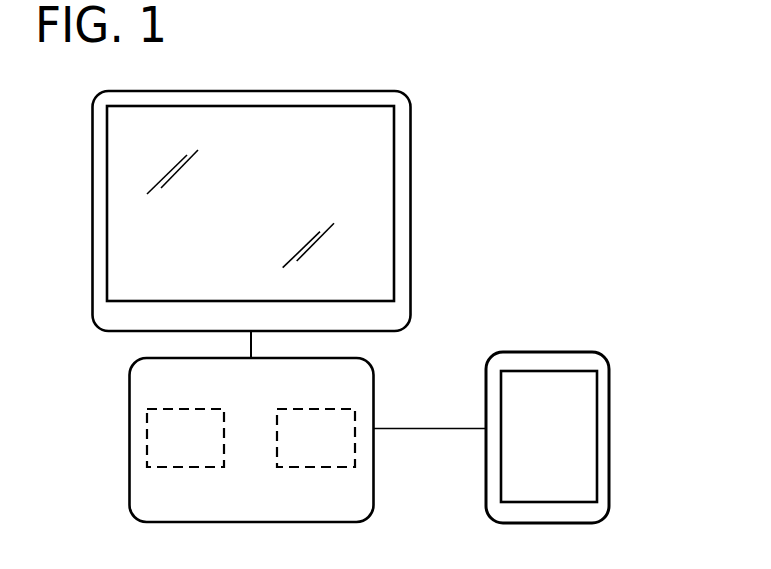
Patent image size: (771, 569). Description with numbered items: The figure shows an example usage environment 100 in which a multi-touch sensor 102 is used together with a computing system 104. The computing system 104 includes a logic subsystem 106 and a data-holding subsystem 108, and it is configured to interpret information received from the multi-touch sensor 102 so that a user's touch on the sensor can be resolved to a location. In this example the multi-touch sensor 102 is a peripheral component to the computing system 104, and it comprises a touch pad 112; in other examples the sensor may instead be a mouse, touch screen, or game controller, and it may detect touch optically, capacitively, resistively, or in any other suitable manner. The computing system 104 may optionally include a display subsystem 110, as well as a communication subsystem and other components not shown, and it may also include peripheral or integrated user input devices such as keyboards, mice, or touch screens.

The usage environment 100 is at (507, 79).
The multi-touch sensor 102 is at (610, 397).
The computing system 104 is at (340, 509).
The logic subsystem 106 is at (206, 452).
The data-holding subsystem 108 is at (338, 452).
The display subsystem 110 is at (411, 198).
The touch pad 112 is at (597, 477).